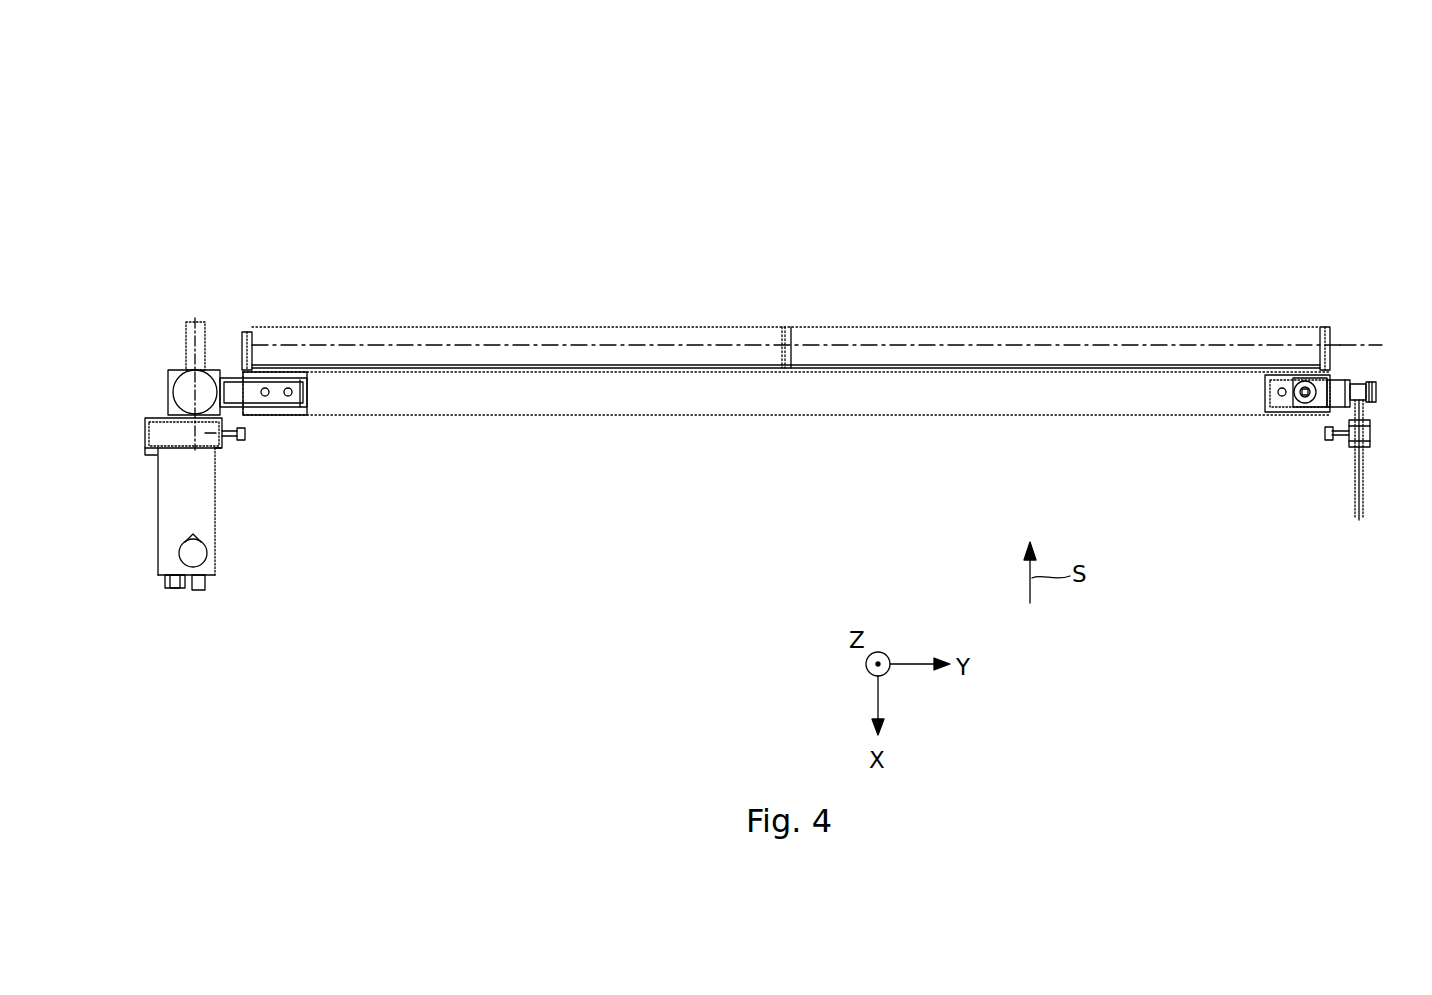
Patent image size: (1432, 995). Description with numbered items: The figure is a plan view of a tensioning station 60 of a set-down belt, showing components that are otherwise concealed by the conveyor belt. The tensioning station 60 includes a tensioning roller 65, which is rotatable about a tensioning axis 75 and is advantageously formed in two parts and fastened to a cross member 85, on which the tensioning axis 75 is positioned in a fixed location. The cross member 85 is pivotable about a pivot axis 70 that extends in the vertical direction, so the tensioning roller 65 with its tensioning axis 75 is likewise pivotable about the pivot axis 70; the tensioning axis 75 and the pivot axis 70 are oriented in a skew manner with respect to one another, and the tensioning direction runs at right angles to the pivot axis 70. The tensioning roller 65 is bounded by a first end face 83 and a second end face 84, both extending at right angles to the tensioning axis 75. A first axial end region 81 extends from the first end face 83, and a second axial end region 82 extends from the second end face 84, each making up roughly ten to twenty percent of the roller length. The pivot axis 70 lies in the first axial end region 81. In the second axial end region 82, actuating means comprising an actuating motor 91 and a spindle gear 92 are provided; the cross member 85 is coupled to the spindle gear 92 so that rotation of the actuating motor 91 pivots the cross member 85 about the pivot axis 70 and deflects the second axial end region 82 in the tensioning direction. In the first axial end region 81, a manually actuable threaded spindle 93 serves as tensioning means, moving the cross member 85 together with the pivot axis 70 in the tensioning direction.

The tensioning station 60 is at (1297, 201).
The tensioning roller 65 is at (984, 335).
The pivot axis 70 is at (1290, 414).
The tensioning axis 75 is at (1350, 343).
The first axial end region 81 is at (1308, 322).
The second axial end region 82 is at (264, 323).
The first end face 83 is at (1323, 327).
The second end face 84 is at (247, 328).
The cross member 85 is at (788, 398).
The actuating motor 91 is at (165, 501).
The spindle gear 92 is at (172, 392).
The threaded spindle 93 is at (1364, 465).